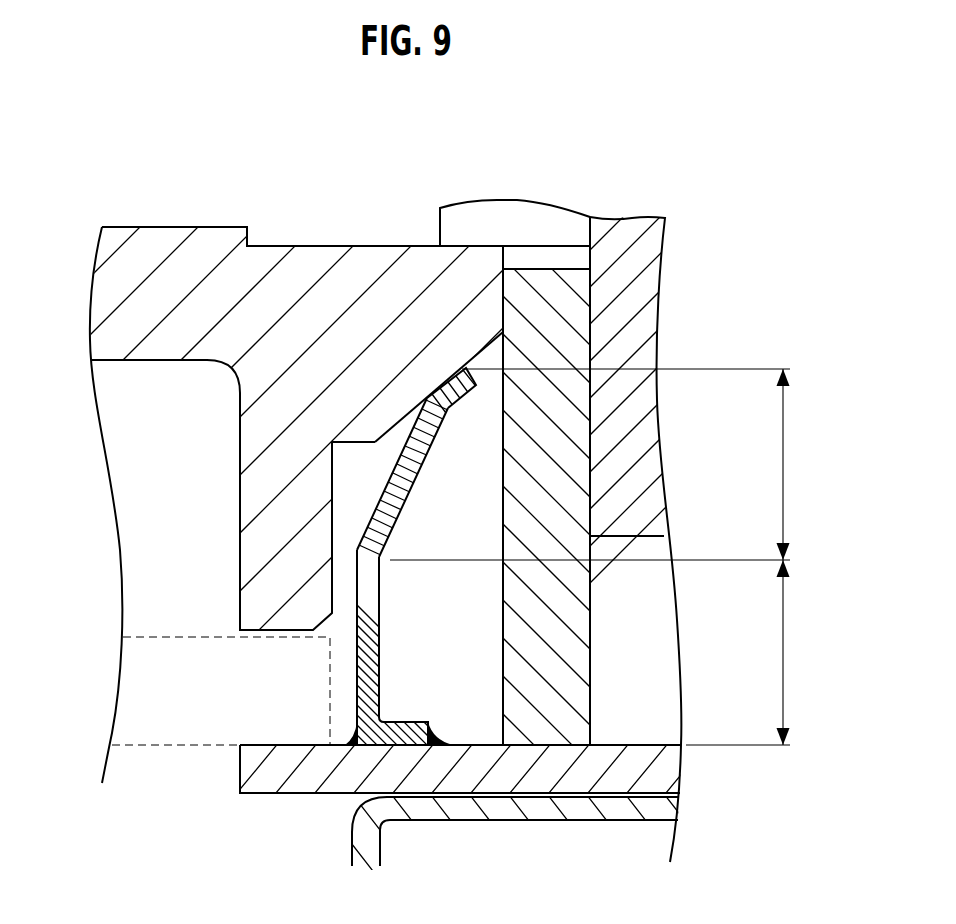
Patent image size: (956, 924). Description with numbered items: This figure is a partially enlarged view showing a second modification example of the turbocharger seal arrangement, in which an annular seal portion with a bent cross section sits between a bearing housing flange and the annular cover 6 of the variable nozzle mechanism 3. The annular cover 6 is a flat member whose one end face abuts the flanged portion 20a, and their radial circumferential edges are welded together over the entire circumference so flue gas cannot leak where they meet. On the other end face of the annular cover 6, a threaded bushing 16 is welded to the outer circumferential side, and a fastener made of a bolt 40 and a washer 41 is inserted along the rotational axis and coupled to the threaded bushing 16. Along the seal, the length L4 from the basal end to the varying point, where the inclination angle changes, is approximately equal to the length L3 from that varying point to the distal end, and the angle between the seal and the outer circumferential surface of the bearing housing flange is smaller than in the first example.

The variable nozzle mechanism 3 is at (178, 636).
The washer 41 is at (457, 225).
The threaded bushing 16 is at (580, 632).
The bolt 40 is at (652, 434).
The annular cover 6 is at (666, 772).
The flanged portion 20a is at (668, 806).
The length L3 is at (602, 464).
The length L4 is at (750, 652).